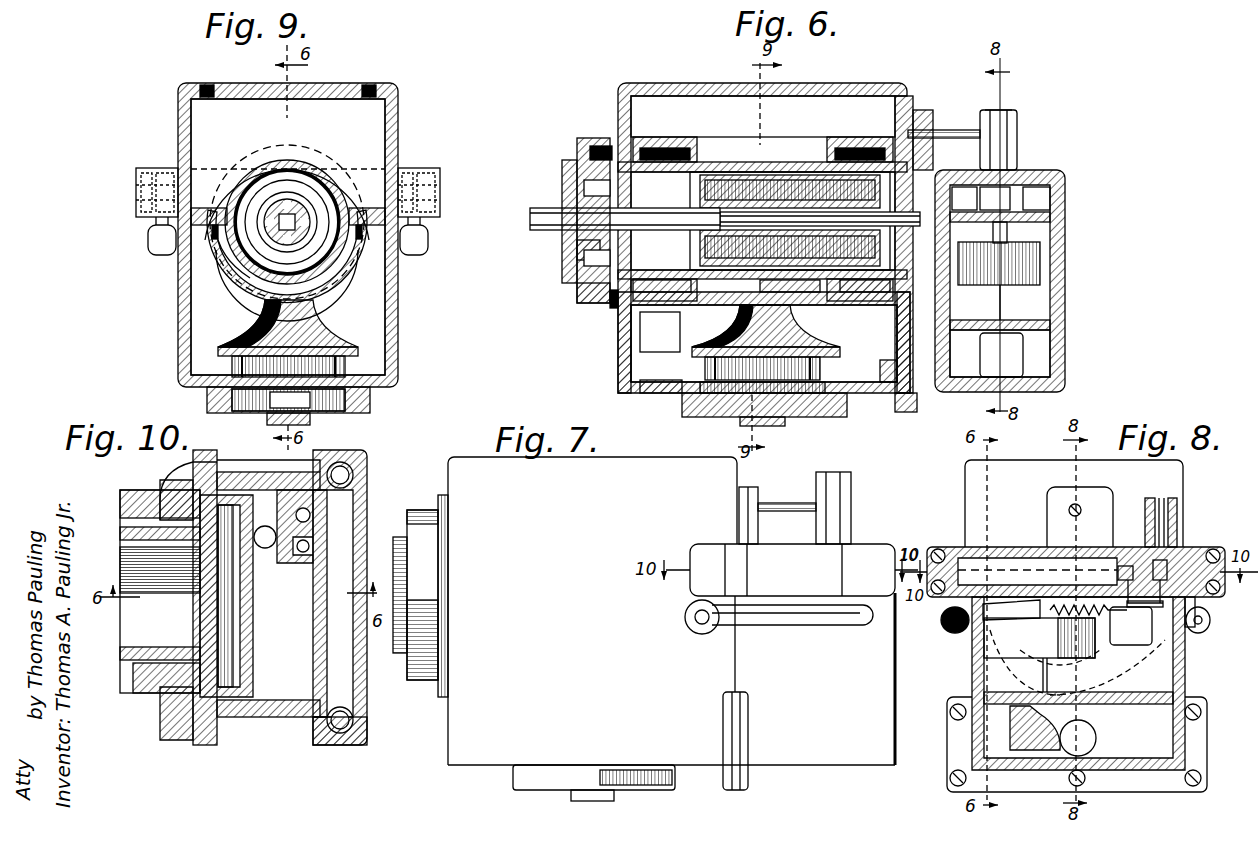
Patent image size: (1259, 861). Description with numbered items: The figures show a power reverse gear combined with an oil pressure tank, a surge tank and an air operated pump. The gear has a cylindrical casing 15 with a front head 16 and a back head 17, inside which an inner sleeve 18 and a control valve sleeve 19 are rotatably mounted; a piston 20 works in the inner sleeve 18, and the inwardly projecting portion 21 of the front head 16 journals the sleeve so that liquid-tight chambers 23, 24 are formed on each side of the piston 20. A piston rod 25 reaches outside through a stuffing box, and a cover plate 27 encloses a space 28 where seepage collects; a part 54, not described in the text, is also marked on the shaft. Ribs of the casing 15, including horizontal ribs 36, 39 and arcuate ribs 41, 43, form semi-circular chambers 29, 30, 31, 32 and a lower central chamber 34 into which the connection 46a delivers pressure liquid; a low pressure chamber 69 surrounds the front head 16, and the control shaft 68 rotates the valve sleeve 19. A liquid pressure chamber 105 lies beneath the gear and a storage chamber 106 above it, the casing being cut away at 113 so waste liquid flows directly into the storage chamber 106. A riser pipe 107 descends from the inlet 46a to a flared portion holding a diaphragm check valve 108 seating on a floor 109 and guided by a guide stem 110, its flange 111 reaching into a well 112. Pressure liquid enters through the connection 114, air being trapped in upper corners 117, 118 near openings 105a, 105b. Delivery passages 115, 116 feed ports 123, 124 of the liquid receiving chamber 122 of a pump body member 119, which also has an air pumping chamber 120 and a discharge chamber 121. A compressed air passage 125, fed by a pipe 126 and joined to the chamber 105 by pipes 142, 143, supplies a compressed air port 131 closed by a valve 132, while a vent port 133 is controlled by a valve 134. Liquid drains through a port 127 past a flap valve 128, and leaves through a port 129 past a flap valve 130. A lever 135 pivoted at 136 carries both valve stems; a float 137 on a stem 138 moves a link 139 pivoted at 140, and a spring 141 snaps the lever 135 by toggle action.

In FIG. 9, the cylindrical casing 15 is at (358, 290).
In FIG. 6, the cylindrical casing 15 is at (668, 338).
In FIG. 6, the front head 16 is at (614, 308).
In FIG. 7, the front head 16 is at (420, 512).
In FIG. 6, the back head 17 is at (902, 332).
In FIG. 10, the back head 17 is at (232, 600).
In FIG. 7, the back head 17 is at (759, 525).
In FIG. 8, the back head 17 is at (1043, 527).
In FIG. 9, the inner sleeve 18 is at (294, 170).
In FIG. 6, the inner sleeve 18 is at (762, 209).
In FIG. 10, the inner sleeve 18 is at (157, 647).
In FIG. 9, the control valve sleeve 19 is at (335, 178).
In FIG. 6, the control valve sleeve 19 is at (795, 160).
In FIG. 6, the piston 20 is at (727, 185).
In FIG. 6, the inwardly projecting portion of the front head 21 is at (580, 274).
In FIG. 6, the liquid-tight chamber 23 is at (610, 316).
In FIG. 6, the liquid-tight chamber 24 is at (770, 265).
In FIG. 6, the piston rod 25 is at (565, 185).
In FIG. 7, the piston rod 25 is at (393, 593).
In FIG. 6, the cover plate 27 is at (558, 168).
In FIG. 7, the cover plate 27 is at (400, 560).
In FIG. 6, the space around the stuffing box 28 is at (584, 250).
In FIG. 6, the semi-circular chamber 29 is at (658, 148).
In FIG. 6, the semi-circular chamber 30 is at (664, 290).
In FIG. 6, the semi-circular chamber 31 is at (853, 147).
In FIG. 6, the semi-circular chamber 32 is at (863, 287).
In FIG. 6, the lower central chamber 34 is at (676, 300).
In FIG. 9, the horizontally extending rib 36 is at (210, 241).
In FIG. 9, the horizontally extending rib 39 is at (378, 267).
In FIG. 6, the upper arcuate rib 41 is at (712, 145).
In FIG. 9, the upper arcuate rib 43 is at (287, 220).
In FIG. 6, the upper arcuate rib 43 is at (845, 160).
In FIG. 9, the connection 46a is at (268, 312).
In FIG. 6, the inner shaft 54 is at (820, 217).
In FIG. 6, the control shaft 68 is at (950, 128).
In FIG. 7, the control shaft 68 is at (792, 501).
In FIG. 8, the control shaft 68 is at (1083, 523).
In FIG. 6, the low pressure chamber 69 is at (605, 143).
In FIG. 9, the liquid pressure chamber 105 is at (376, 338).
In FIG. 6, the liquid pressure chamber 105 is at (647, 366).
In FIG. 9, the opening 105a is at (148, 240).
In FIG. 9, the opening 105b is at (440, 221).
In FIG. 9, the liquid receiving or storage chamber 106 is at (213, 152).
In FIG. 9, the riser pipe 107 is at (250, 325).
In FIG. 9, the diaphragm check valve 108 is at (310, 362).
In FIG. 6, the diaphragm check valve 108 is at (800, 370).
In FIG. 6, the floor 109 is at (676, 389).
In FIG. 6, the guide stem 110 is at (718, 401).
In FIG. 9, the flange 111 is at (355, 417).
In FIG. 6, the flange 111 is at (740, 422).
In FIG. 9, the well 112 is at (370, 408).
In FIG. 6, the cut-away portion 113 is at (756, 164).
In FIG. 6, the liquid pressure connection 114 is at (901, 372).
In FIG. 8, the liquid pressure connection 114 is at (1082, 743).
In FIG. 10, the delivery passage 115 is at (183, 505).
In FIG. 10, the delivery passage 116 is at (187, 693).
In FIG. 9, the upper corner 117 is at (214, 286).
In FIG. 9, the upper corner 118 is at (376, 279).
In FIG. 6, the body member 119 is at (971, 392).
In FIG. 6, the air pumping chamber 120 is at (1040, 302).
In FIG. 8, the air pumping chamber 120 is at (1153, 680).
In FIG. 6, the liquid pressure discharge chamber 121 is at (1036, 362).
In FIG. 8, the liquid pressure discharge chamber 121 is at (1150, 740).
In FIG. 6, the liquid receiving chamber 122 is at (963, 195).
In FIG. 10, the liquid receiving chamber 122 is at (256, 593).
In FIG. 10, the port 123 is at (220, 482).
In FIG. 10, the port 124 is at (233, 717).
In FIG. 10, the compressed air passage 125 is at (343, 682).
In FIG. 6, the pipe 126 is at (1017, 135).
In FIG. 8, the pipe 126 is at (1143, 530).
In FIG. 10, the port 127 is at (266, 548).
In FIG. 8, the flap valve 128 is at (1183, 653).
In FIG. 8, the port 129 is at (1050, 693).
In FIG. 6, the flap valve 130 is at (1012, 350).
In FIG. 8, the flap valve 130 is at (1007, 728).
In FIG. 8, the compressed air port 131 is at (1193, 602).
In FIG. 8, the valve 132 is at (1160, 577).
In FIG. 8, the vent port 133 is at (1128, 567).
In FIG. 8, the valve 134 is at (1098, 582).
In FIG. 8, the lever 135 is at (1170, 628).
In FIG. 8, the pivot point 136 is at (1037, 573).
In FIG. 8, the float 137 is at (1023, 637).
In FIG. 8, the stem 138 is at (1000, 683).
In FIG. 8, the link 139 is at (1003, 585).
In FIG. 8, the pivot point 140 is at (960, 630).
In FIG. 8, the spring 141 is at (1076, 658).
In FIG. 9, the pipe 142 is at (152, 252).
In FIG. 10, the pipe 142 is at (257, 472).
In FIG. 9, the pipe 143 is at (430, 248).
In FIG. 10, the pipe 143 is at (305, 735).
In FIG. 7, the pipe 143 is at (817, 622).